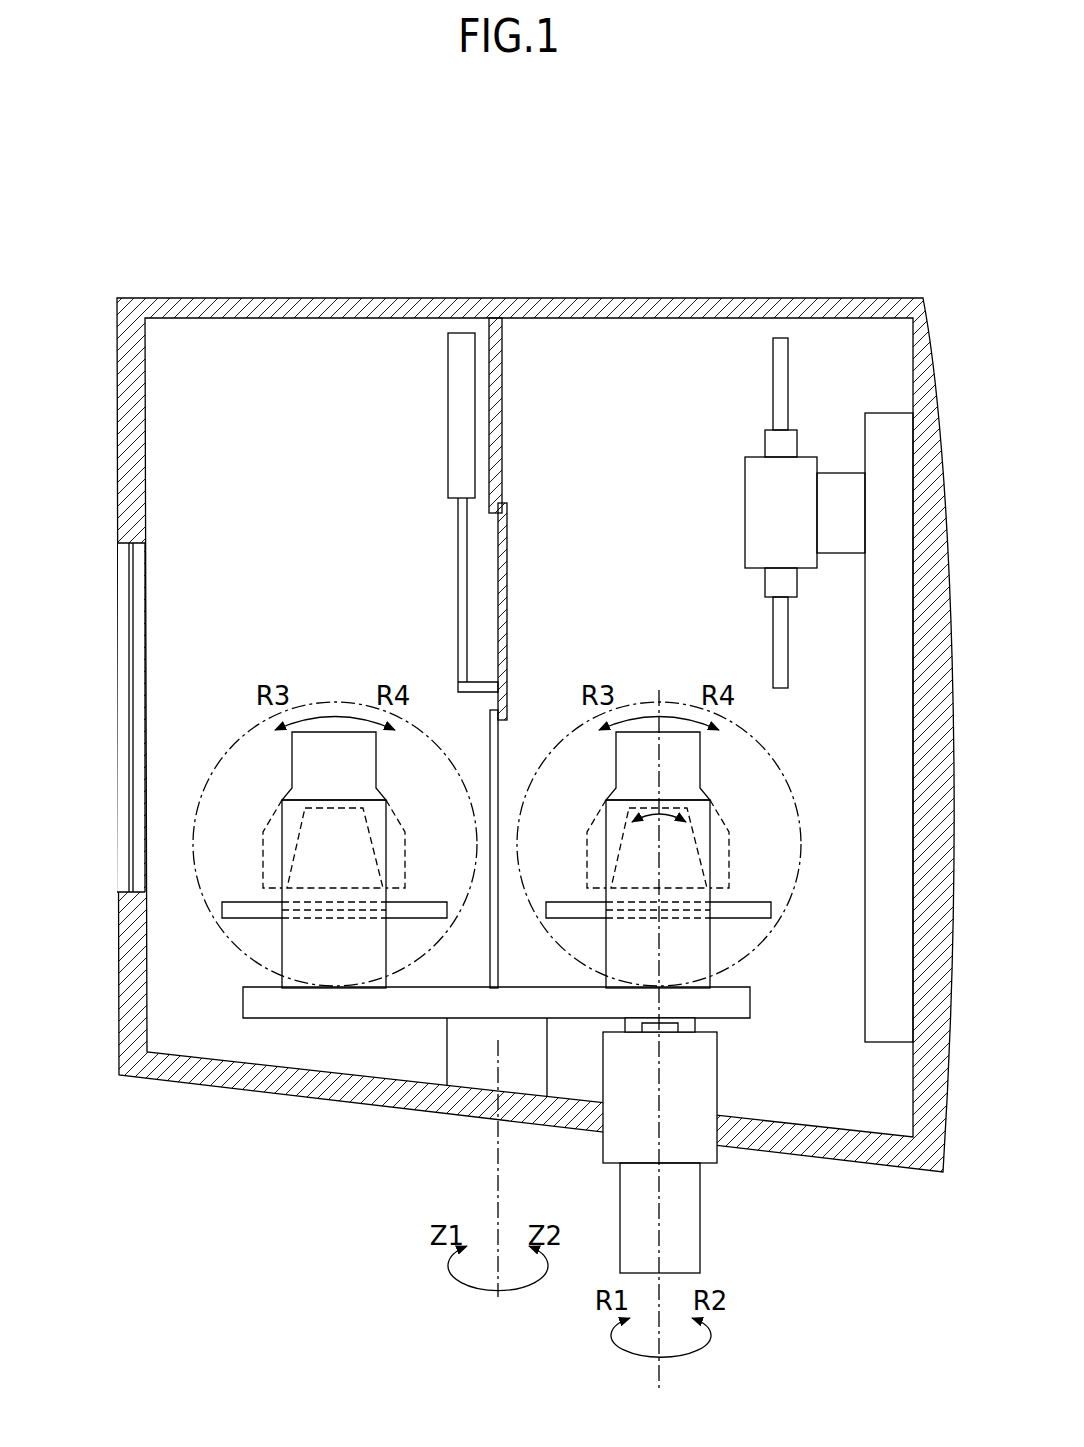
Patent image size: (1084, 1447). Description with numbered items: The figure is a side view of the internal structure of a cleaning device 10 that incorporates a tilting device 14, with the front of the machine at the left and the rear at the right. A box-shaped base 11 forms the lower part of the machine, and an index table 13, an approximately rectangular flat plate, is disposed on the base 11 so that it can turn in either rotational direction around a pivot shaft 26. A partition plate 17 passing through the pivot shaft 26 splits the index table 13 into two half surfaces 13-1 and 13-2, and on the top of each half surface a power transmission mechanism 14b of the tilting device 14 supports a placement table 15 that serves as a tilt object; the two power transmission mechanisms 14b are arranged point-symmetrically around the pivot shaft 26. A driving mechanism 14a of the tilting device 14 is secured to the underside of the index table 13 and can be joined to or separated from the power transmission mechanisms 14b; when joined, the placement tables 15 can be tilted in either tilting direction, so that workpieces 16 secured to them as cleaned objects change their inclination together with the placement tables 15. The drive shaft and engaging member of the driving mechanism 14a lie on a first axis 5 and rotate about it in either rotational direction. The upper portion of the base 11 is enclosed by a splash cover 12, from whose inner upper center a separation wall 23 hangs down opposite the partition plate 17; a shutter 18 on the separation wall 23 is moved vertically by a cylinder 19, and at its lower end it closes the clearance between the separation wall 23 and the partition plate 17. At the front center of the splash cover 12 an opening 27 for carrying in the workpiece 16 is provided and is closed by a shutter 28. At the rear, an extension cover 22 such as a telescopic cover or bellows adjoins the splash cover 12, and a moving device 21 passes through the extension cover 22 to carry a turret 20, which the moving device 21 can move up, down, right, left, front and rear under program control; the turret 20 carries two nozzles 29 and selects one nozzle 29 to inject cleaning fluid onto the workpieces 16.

The cleaning device 10 is at (855, 225).
The base 11 is at (117, 985).
The splash cover 12 is at (290, 318).
The index table 13 is at (496, 1023).
The half surface 13-1 is at (425, 987).
The half surface 13-2 is at (560, 987).
The tilting device 14 is at (821, 928).
The driving mechanism 14a is at (717, 1058).
The power transmission mechanism 14b is at (282, 945).
The placement table 15 is at (240, 900).
The workpiece 16 is at (377, 760).
The partition plate 17 is at (490, 726).
The shutter 18 is at (508, 576).
The cylinder 19 is at (449, 417).
The turret 20 is at (745, 492).
The moving device 21 is at (832, 473).
The extension cover 22 is at (890, 413).
The separation wall 23 is at (503, 397).
The pivot shaft 26 is at (498, 1180).
The opening 27 is at (117, 557).
The shutter 28 is at (146, 622).
The nozzle 29 is at (773, 383).
The first axis 5 is at (660, 1368).